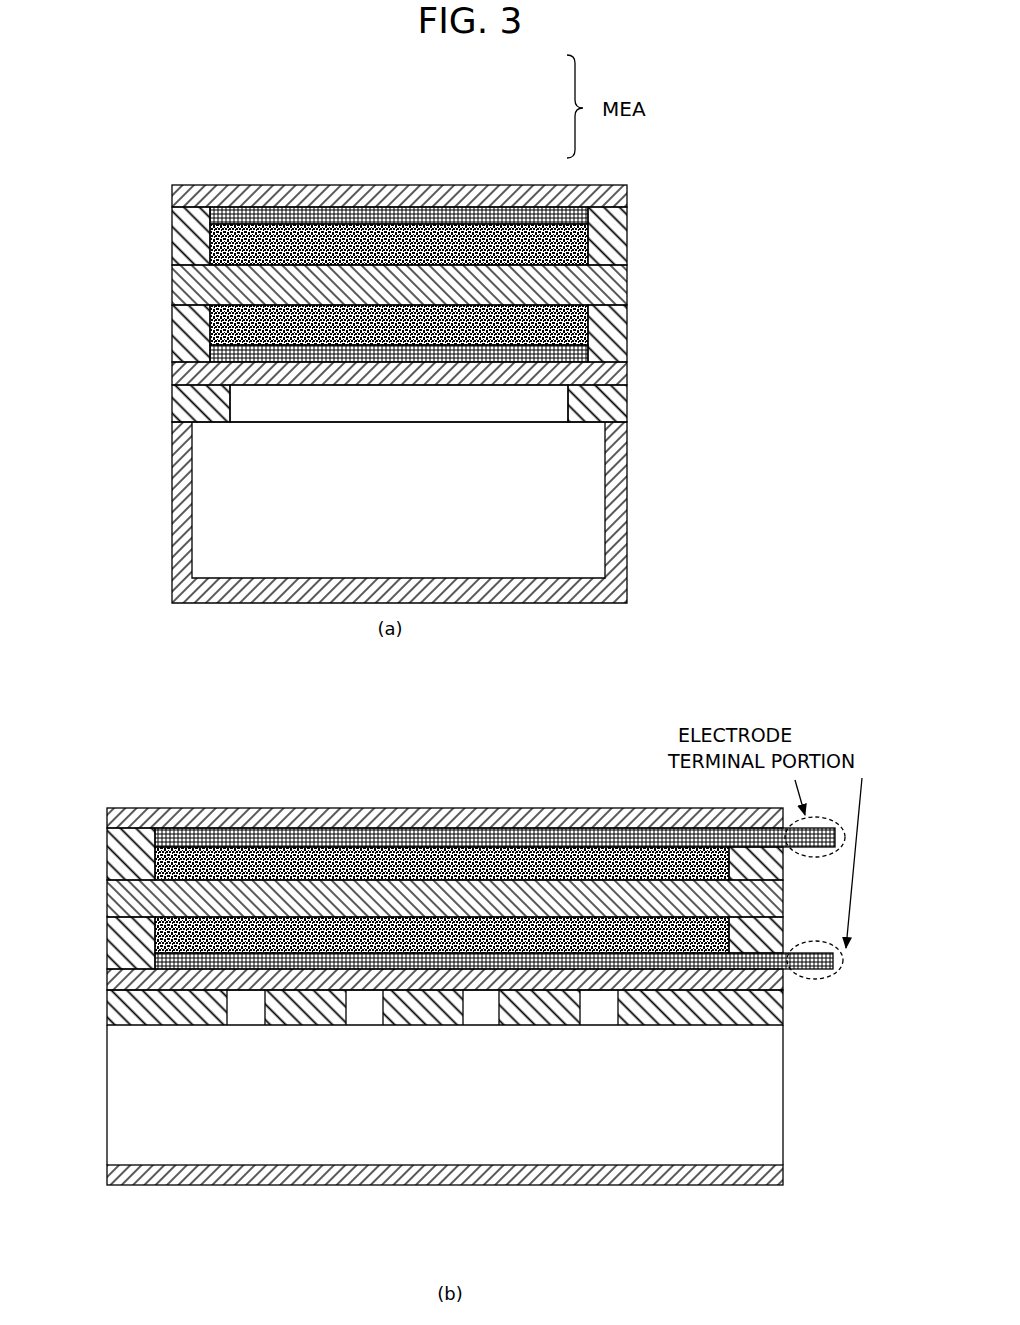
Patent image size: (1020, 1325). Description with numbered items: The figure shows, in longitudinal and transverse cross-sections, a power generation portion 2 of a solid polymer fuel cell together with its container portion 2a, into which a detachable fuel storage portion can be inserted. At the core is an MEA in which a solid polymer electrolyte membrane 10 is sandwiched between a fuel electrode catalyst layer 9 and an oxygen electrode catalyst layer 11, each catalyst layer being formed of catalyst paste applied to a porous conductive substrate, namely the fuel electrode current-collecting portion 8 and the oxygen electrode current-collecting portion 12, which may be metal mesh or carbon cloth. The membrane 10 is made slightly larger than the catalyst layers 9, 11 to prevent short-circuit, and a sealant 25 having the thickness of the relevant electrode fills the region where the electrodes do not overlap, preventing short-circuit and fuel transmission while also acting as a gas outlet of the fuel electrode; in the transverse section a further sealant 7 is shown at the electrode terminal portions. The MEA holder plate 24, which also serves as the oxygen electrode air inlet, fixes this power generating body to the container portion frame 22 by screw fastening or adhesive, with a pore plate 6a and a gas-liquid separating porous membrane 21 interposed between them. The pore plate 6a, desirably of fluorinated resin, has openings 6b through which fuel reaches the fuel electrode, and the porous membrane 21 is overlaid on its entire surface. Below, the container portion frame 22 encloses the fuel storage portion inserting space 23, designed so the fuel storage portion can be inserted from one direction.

The power generation portion 2 is at (106, 185).
The container portion 2a is at (134, 380).
The pore plate (power generation portion side) 6a is at (628, 404).
The opening (power generation portion side) 6b is at (434, 402).
The sealant 7 is at (772, 870).
The fuel electrode current-collecting portion 8 is at (325, 348).
The fuel electrode catalyst layer 9 is at (460, 324).
The solid polymer electrolyte membrane 10 is at (445, 283).
The oxygen electrode catalyst layer 11 is at (420, 247).
The oxygen electrode current-collecting portion 12 is at (255, 213).
The porous membrane (power generation portion side gas-liquid separation membrane) 21 is at (628, 373).
The container portion frame 22 is at (628, 535).
The fuel storage portion inserting space 23 is at (440, 512).
The MEA holder plate 24 is at (322, 185).
The sealant 25 is at (196, 250).